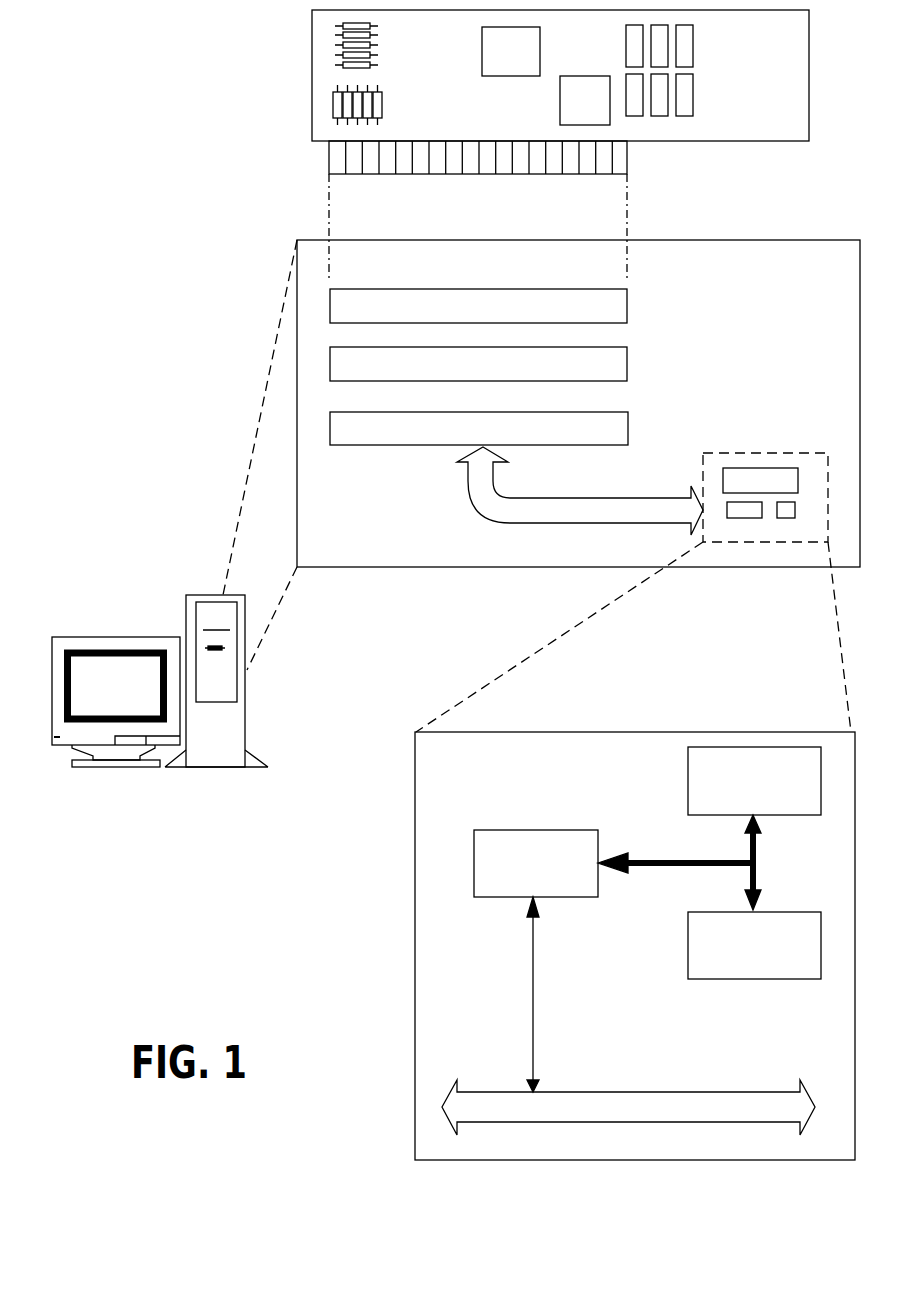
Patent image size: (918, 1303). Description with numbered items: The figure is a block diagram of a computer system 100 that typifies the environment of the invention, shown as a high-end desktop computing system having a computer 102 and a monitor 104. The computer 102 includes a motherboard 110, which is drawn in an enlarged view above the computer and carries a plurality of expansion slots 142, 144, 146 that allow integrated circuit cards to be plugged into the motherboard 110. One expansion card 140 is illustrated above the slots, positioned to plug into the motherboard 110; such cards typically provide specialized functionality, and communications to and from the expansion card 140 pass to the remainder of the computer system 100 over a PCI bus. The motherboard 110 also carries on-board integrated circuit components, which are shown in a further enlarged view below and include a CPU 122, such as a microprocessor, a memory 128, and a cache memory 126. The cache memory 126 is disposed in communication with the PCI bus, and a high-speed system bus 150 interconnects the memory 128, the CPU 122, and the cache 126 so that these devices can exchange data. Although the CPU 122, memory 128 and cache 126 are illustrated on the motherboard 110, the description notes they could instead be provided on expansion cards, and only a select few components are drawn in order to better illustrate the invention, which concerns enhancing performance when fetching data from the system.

The computer system 100 is at (123, 545).
The computer 102 is at (245, 679).
The monitor 104 is at (115, 767).
The motherboard 110 is at (720, 240).
The CPU 122 is at (713, 979).
The cache memory 126 is at (507, 830).
The memory 128 is at (688, 781).
The expansion card 140 is at (707, 141).
The expansion slot 142 is at (478, 306).
The expansion slot 144 is at (478, 364).
The expansion slot 146 is at (479, 428).
The system bus 150 is at (657, 860).